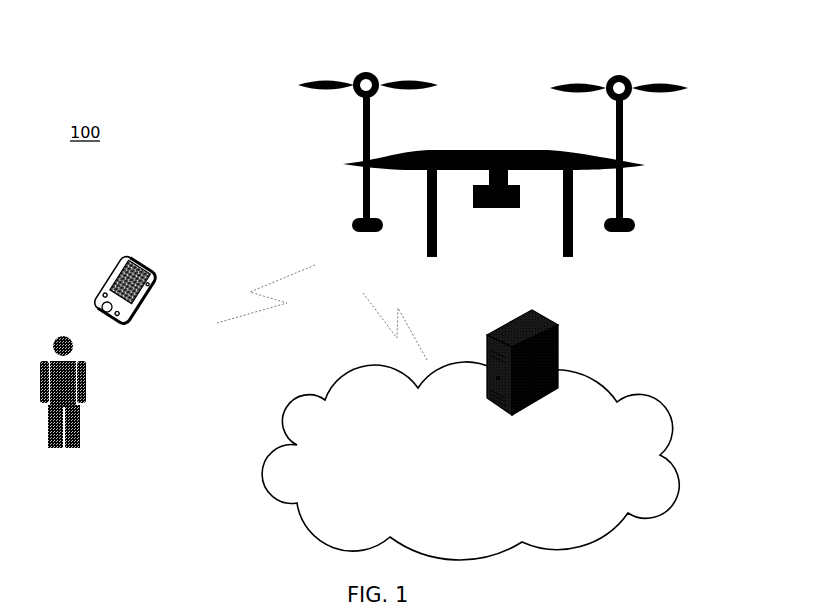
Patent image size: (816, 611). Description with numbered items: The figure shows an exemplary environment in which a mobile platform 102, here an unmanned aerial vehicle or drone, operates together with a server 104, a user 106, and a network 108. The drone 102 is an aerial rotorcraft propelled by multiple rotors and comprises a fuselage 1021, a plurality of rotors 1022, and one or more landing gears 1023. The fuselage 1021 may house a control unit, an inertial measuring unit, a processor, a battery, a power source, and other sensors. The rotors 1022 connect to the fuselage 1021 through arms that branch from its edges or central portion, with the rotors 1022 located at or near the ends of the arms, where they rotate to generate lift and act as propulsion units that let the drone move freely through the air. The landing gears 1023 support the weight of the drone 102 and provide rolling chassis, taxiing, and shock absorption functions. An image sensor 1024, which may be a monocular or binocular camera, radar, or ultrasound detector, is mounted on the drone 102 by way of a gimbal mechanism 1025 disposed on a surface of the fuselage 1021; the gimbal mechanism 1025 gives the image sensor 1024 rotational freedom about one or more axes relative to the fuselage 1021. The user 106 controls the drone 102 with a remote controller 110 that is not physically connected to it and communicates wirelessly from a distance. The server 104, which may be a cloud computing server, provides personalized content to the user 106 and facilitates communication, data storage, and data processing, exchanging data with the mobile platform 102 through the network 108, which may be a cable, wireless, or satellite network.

The mobile platform 102 is at (539, 153).
The fuselage 1021 is at (540, 134).
The rotors 1022 is at (690, 90).
The landing gears 1023 is at (438, 245).
The image sensor 1024 is at (520, 197).
The gimbal mechanism 1025 is at (508, 180).
The server 104 is at (558, 362).
The user 106 is at (77, 438).
The network 108 is at (470, 461).
The remote controller 110 is at (133, 250).